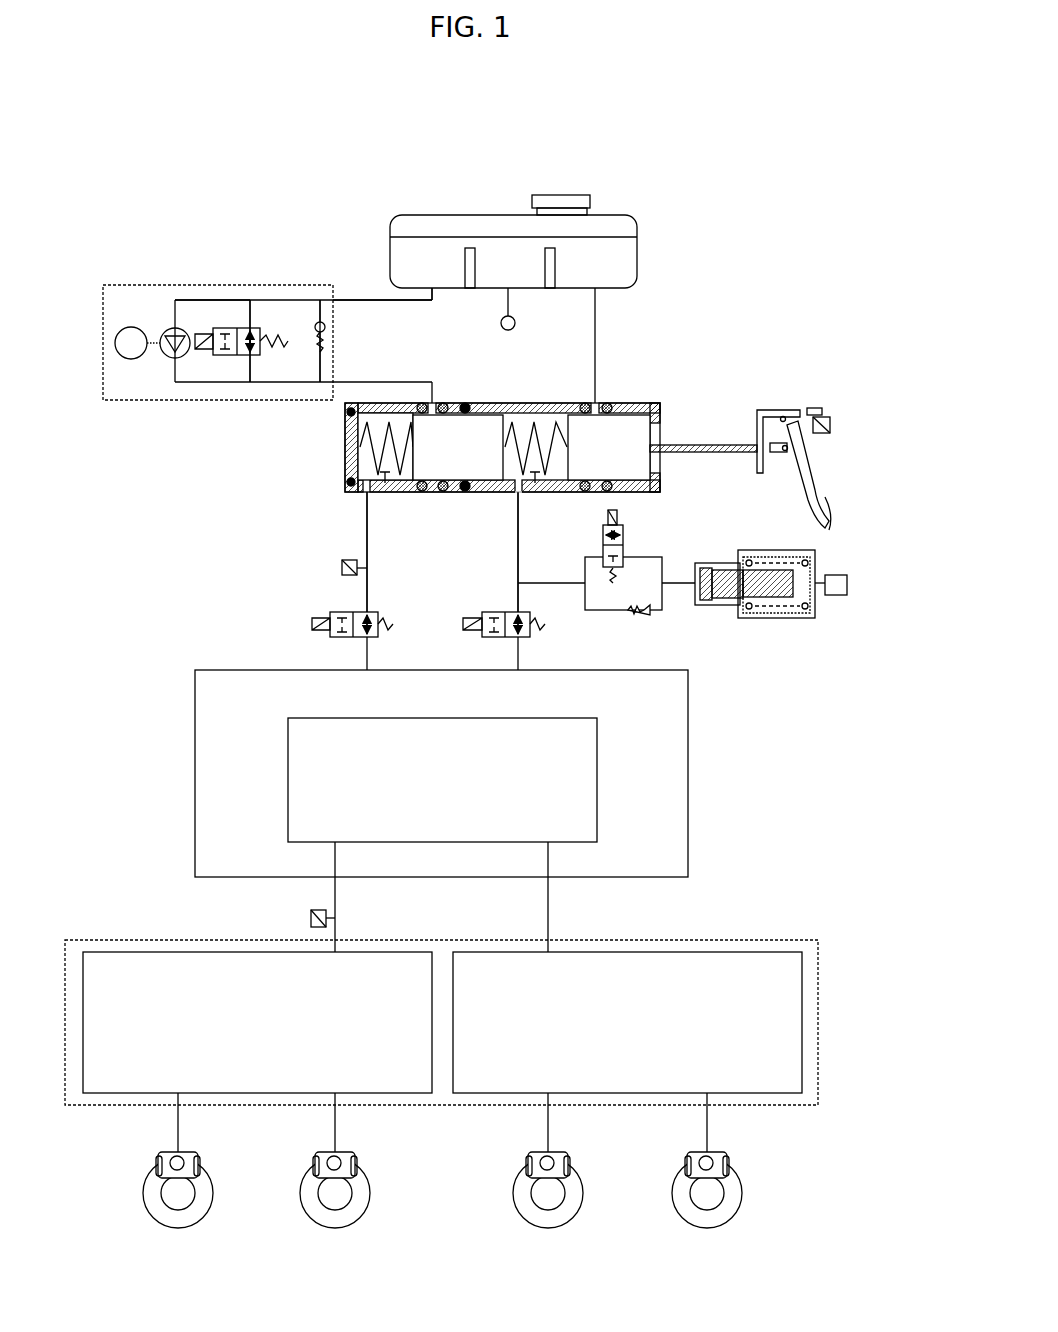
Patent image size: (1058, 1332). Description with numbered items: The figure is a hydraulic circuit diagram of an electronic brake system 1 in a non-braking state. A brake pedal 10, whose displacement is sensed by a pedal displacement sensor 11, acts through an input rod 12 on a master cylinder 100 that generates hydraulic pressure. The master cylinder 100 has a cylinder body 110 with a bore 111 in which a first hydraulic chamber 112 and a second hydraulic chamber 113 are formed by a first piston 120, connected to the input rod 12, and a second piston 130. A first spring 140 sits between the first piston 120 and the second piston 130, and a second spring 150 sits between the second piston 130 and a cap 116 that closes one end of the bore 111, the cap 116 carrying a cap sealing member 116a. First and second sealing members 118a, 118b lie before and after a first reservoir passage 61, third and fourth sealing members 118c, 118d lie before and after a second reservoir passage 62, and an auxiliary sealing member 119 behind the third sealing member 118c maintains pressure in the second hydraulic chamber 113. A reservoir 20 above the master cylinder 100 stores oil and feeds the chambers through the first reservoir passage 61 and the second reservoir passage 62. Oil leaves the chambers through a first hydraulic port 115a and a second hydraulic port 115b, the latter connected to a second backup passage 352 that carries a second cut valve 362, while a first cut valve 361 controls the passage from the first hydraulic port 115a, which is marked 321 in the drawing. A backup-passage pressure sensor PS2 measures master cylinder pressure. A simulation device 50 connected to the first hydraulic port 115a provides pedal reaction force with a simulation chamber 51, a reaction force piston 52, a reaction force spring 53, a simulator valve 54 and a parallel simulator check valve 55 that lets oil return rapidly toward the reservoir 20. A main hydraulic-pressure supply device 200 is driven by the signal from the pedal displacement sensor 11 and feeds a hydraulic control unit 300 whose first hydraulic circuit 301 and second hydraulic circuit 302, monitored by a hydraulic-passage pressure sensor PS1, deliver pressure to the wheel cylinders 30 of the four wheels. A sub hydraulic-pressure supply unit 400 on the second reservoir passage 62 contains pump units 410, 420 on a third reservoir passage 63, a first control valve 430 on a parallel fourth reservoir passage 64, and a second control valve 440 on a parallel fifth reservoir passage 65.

The electronic brake system 1 is at (357, 165).
The brake pedal 10 is at (808, 470).
The pedal displacement sensor 11 is at (826, 410).
The input rod 12 is at (755, 432).
The reservoir 20 is at (390, 233).
The wheel cylinders 30 is at (198, 1163).
The simulation device 50 is at (710, 588).
The simulation chamber 51 is at (783, 620).
The reaction force piston 52 is at (727, 600).
The reaction force spring 53 is at (748, 606).
The simulator valve 54 is at (624, 531).
The simulator check valve 55 is at (640, 616).
The first reservoir passage 61 is at (594, 300).
The second reservoir passage 62 is at (362, 299).
The third reservoir passage 63 is at (200, 299).
The fourth reservoir passage 64 is at (246, 328).
The fifth reservoir passage 65 is at (318, 320).
The master cylinder 100 is at (514, 477).
The cylinder body 110 is at (513, 403).
The bore 111 is at (543, 413).
The first hydraulic chamber 112 is at (537, 478).
The second hydraulic chamber 113 is at (385, 470).
The first hydraulic port 115a is at (516, 495).
The second hydraulic port 115b is at (362, 495).
The cap 116 is at (345, 430).
The cap sealing member 116a is at (345, 480).
The first sealing member 118a is at (607, 403).
The second sealing member 118b is at (585, 403).
The third sealing member 118c is at (443, 403).
The fourth sealing member 118d is at (420, 403).
The auxiliary sealing member 119 is at (466, 403).
The first piston 120 is at (655, 465).
The second piston 130 is at (490, 415).
The first spring 140 is at (560, 472).
The second spring 150 is at (372, 405).
The main hydraulic-pressure supply device 200 is at (283, 755).
The hydraulic control unit 300 is at (441, 992).
The first hydraulic circuit 301 is at (722, 962).
The second hydraulic circuit 302 is at (150, 962).
The first backup flow path 321 is at (517, 540).
The second backup passage 352 is at (366, 540).
The first cut valve 361 is at (530, 637).
The second cut valve 362 is at (375, 615).
The sub hydraulic-pressure supply unit 400 is at (118, 281).
The pump unit 410 is at (167, 328).
The pump unit 420 is at (114, 343).
The first control valve 430 is at (225, 357).
The second control valve 440 is at (330, 325).
The hydraulic-passage pressure sensor PS1 is at (310, 919).
The backup-passage pressure sensor PS2 is at (341, 568).